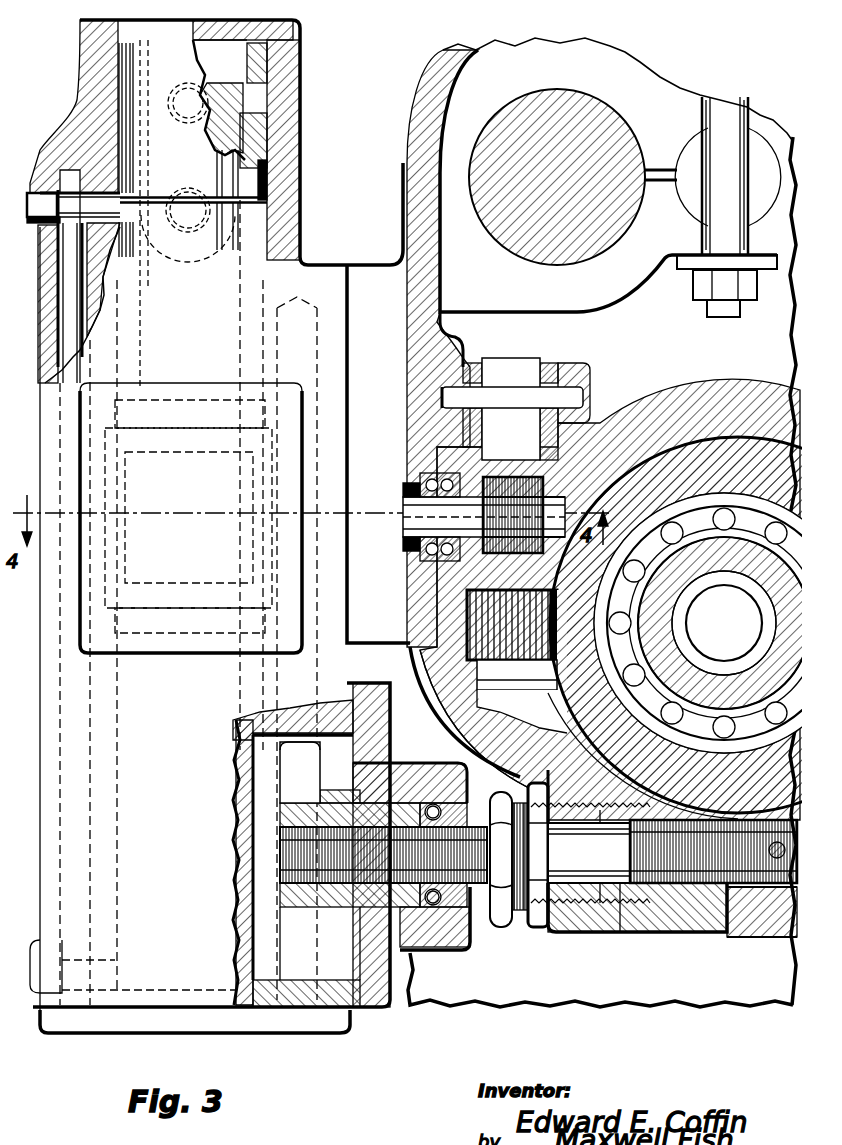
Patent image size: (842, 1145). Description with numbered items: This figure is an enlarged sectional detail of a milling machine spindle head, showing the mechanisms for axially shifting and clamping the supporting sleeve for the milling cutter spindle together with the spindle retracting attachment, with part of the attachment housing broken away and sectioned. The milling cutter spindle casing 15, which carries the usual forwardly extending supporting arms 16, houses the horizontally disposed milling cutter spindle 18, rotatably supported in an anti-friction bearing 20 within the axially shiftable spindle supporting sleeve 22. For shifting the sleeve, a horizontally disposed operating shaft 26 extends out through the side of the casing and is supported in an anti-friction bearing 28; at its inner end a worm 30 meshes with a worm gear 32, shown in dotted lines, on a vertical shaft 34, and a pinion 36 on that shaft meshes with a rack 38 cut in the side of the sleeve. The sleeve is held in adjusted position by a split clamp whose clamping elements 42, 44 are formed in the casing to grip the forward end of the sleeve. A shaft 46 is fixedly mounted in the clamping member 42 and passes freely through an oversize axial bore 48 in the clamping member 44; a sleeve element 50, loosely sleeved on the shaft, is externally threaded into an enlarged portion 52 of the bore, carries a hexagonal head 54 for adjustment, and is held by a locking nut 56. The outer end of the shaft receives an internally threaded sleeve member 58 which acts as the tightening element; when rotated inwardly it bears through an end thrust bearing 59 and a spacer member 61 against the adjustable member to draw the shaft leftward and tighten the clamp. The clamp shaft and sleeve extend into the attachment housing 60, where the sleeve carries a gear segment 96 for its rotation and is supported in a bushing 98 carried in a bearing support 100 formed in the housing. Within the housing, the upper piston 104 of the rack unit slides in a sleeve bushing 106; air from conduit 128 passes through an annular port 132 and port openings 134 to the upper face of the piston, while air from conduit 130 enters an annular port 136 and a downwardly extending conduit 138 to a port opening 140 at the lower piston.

The milling cutter spindle casing 15 is at (462, 64).
The forwardly extending supporting arms 16 is at (561, 96).
The milling cutter spindle 18 is at (673, 567).
The anti-friction bearing 20 is at (713, 522).
The spindle supporting sleeve 22 is at (722, 450).
The operating shaft 26 is at (405, 497).
The anti-friction bearing 28 is at (420, 565).
The worm 30 is at (506, 477).
The worm gear 32 is at (403, 518).
The vertical shaft 34 is at (517, 363).
The pinion 36 is at (470, 620).
The rack 38 is at (553, 672).
The split clamping element 42 is at (735, 937).
The split clamping element 44 is at (660, 890).
The shaft 46 is at (572, 905).
The oversize axial bore 48 is at (642, 895).
The sleeve element 50 is at (520, 912).
The enlarged portion of the bore 52 is at (603, 906).
The hexagonal head 54 is at (500, 928).
The locking nut 56 is at (540, 928).
The internally threaded sleeve member 58 is at (293, 897).
The end thrust bearing 59 is at (433, 905).
The housing 60 is at (317, 268).
The spacer member 61 is at (472, 955).
The gear segment 96 is at (283, 775).
The bushing 98 is at (337, 920).
The bearing support 100 is at (424, 770).
The piston 104 is at (235, 130).
The sleeve bushing 106 is at (250, 157).
The conduit 128 is at (187, 125).
The conduit 130 is at (187, 235).
The annular port 132 is at (260, 97).
The port openings 134 is at (245, 60).
The annular port 136 is at (262, 212).
The downwardly extending conduit 138 is at (77, 327).
The port opening 140 is at (118, 968).